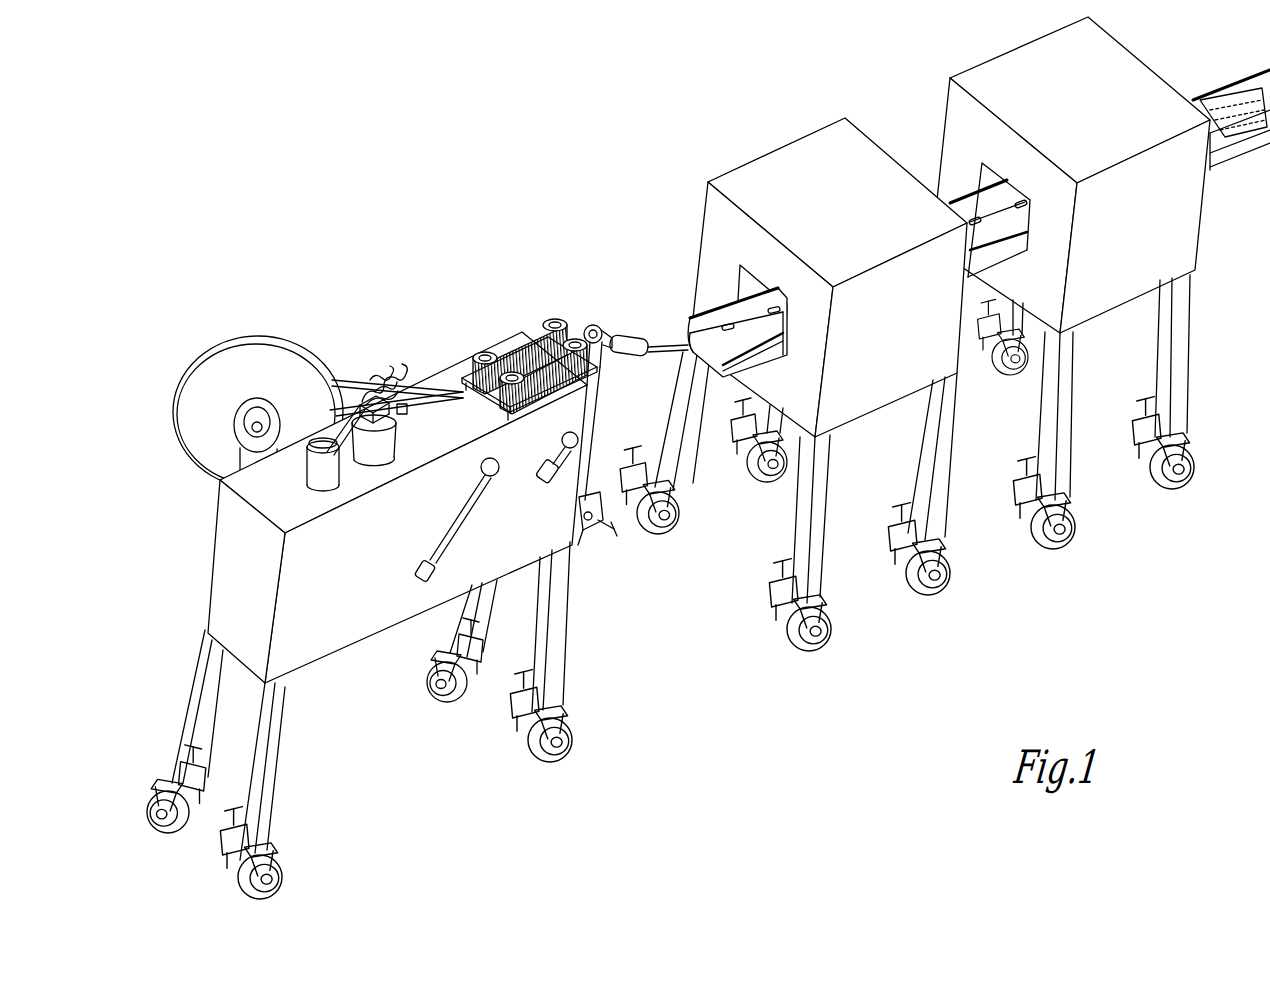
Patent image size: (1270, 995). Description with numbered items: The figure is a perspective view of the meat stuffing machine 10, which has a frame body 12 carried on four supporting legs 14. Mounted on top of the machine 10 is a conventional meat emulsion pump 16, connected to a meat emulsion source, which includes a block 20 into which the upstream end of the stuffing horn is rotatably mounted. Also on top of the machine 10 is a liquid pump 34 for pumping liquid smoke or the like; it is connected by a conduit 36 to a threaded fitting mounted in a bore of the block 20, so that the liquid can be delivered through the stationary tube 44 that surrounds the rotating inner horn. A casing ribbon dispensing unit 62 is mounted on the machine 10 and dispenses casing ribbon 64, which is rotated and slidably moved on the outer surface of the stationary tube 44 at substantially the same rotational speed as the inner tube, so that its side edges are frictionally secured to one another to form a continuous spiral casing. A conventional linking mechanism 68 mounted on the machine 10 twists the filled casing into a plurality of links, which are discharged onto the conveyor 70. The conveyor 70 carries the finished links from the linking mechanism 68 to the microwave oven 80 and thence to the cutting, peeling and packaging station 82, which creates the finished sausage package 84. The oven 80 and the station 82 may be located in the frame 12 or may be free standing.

The meat stuffing machine 10 is at (210, 312).
The frame body 12 is at (222, 520).
The supporting legs 14 is at (196, 691).
The meat emulsion pump 16 is at (392, 442).
The block 20 is at (405, 424).
The liquid pump 34 is at (318, 474).
The conduit 36 is at (350, 410).
The stationary tube 44 is at (437, 403).
The casing ribbon dispensing unit 62 is at (305, 338).
The casing ribbon 64 is at (421, 387).
The linking mechanism 68 is at (496, 307).
The conveyor 70 is at (722, 306).
The microwave oven 80 is at (760, 150).
The cutting, peeling and packaging station 82 is at (1000, 45).
The finished sausage package 84 is at (1233, 92).